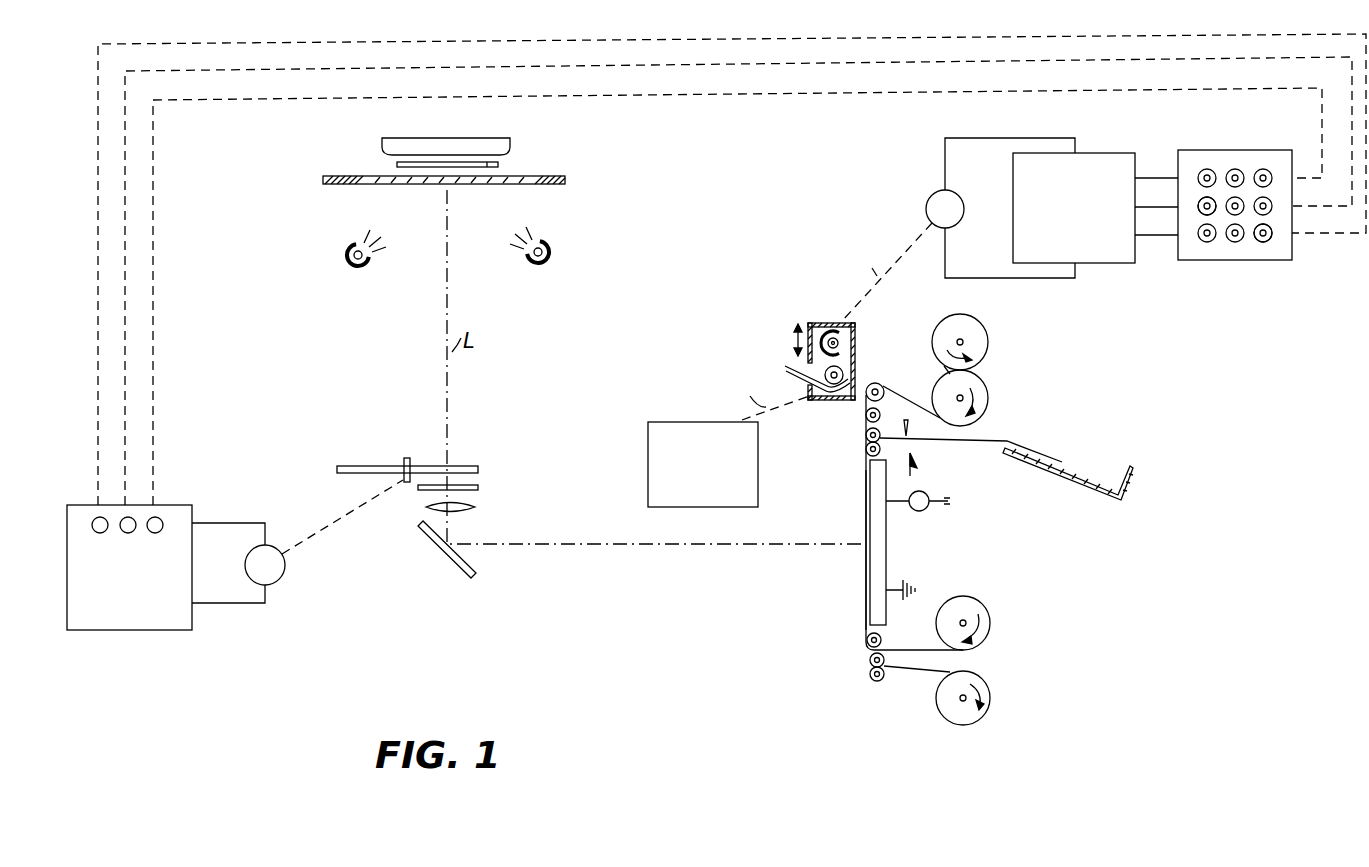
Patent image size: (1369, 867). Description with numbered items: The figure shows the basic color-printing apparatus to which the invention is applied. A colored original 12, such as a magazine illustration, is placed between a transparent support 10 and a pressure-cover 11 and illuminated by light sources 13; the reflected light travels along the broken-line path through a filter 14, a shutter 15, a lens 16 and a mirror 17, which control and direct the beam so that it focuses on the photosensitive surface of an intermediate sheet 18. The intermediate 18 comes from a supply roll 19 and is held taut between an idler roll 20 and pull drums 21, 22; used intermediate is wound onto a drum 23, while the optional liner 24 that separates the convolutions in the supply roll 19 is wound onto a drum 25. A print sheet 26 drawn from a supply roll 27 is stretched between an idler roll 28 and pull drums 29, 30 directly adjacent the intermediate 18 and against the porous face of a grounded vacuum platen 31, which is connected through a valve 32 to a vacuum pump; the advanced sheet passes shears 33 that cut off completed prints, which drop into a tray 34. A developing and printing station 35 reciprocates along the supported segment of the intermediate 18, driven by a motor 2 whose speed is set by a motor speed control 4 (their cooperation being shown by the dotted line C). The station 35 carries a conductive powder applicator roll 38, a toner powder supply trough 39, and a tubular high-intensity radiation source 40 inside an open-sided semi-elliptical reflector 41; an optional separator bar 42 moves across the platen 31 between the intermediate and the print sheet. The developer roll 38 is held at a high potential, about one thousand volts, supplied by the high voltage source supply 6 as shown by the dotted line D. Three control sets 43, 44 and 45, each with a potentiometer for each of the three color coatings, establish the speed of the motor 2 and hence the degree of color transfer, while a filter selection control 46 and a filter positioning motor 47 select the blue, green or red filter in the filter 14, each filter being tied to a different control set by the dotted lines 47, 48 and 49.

The motor 2 is at (927, 200).
The motor speed control 4 is at (1110, 264).
The high voltage source supply 6 is at (663, 421).
The transparent support 10 is at (405, 186).
The pressure-cover 11 is at (508, 142).
The colored original 12 is at (498, 165).
The light sources 13 is at (360, 266).
The filter 14 is at (478, 467).
The shutter 15 is at (478, 488).
The lens 16 is at (475, 508).
The mirror 17 is at (428, 548).
The intermediate sheet 18 is at (866, 588).
The supply roll 19 is at (986, 396).
The idler roll 20 is at (884, 388).
The pull drum 21 is at (885, 661).
The pull drum 22 is at (876, 682).
The wind-up drum 23 is at (990, 692).
The liner 24 is at (944, 366).
The liner wind-up drum 25 is at (986, 334).
The print sheet 26 is at (866, 512).
The print sheet supply roll 27 is at (990, 613).
The idler roll 28 is at (882, 641).
The pull drum 29 is at (866, 451).
The pull drum 30 is at (866, 436).
The vacuum platen 31 is at (886, 563).
The valve 32 is at (924, 511).
The shears 33 is at (914, 464).
The tray 34 is at (1100, 498).
The developing and printing station 35 is at (807, 323).
The conductive powder applicator roll 38 is at (842, 371).
The toner powder supply trough 39 is at (785, 367).
The tubular high-intensity radiation source 40 is at (840, 343).
The open-sided semi-elliptical reflector 41 is at (826, 336).
The separator bar 42 is at (866, 416).
The control set 43 is at (1270, 176).
The control set 44 is at (1202, 210).
The control set 45 is at (1267, 237).
The filter selection control 46 is at (140, 631).
The filter positioning motor 47 is at (282, 576).
The dotted line 48 is at (936, 64).
The dotted line 49 is at (894, 96).